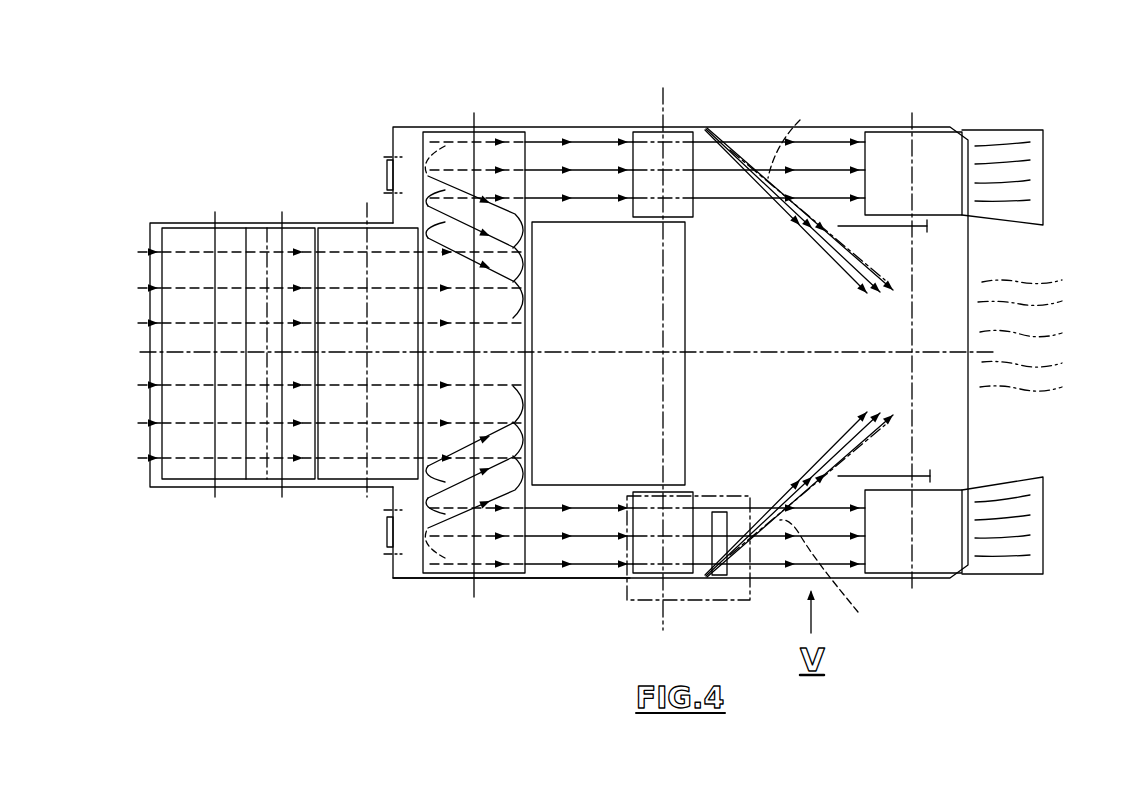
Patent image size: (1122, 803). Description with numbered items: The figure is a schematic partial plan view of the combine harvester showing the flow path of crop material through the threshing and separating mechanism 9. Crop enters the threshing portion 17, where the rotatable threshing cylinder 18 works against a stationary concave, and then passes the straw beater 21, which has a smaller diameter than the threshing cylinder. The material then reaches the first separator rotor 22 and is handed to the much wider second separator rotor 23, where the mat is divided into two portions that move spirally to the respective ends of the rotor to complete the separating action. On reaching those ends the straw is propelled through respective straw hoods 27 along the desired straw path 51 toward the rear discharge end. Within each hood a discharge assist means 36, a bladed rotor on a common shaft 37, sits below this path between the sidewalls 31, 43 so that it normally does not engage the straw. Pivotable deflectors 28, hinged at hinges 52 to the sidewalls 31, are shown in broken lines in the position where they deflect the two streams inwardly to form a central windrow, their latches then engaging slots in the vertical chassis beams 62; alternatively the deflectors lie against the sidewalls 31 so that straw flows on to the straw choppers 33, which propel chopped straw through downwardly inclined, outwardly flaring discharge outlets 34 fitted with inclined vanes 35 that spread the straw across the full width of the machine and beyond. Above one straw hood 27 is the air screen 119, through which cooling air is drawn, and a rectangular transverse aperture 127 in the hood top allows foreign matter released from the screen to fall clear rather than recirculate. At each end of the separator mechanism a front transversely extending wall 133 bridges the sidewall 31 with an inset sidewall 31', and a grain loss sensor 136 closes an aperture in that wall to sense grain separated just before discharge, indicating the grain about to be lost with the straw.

The threshing and separating mechanism 9 is at (370, 150).
The threshing portion 17 is at (182, 221).
The threshing cylinder 18 is at (152, 441).
The straw beater 21 is at (297, 228).
The first separator rotor 22 is at (335, 468).
The second separator rotor 23 is at (428, 578).
The straw hood 27 is at (597, 207).
The pivotable deflector 28 is at (800, 120).
The sidewall 31 is at (479, 358).
The inset sidewall 31' is at (229, 358).
The straw chopper 33 is at (930, 140).
The discharge outlet 34 is at (1015, 135).
The inclined vanes 35 is at (1023, 164).
The discharge assist means 36 is at (650, 218).
The shaft 37 is at (663, 341).
The sidewall of straw hood 43 is at (553, 223).
The straw path 51 is at (597, 167).
The hinge 52 is at (705, 130).
The vertical beam 62 is at (840, 227).
The air screen 119 is at (667, 605).
The aperture 127 is at (720, 514).
The front transversely extending wall 133 is at (392, 203).
The grain loss sensor 136 is at (380, 175).